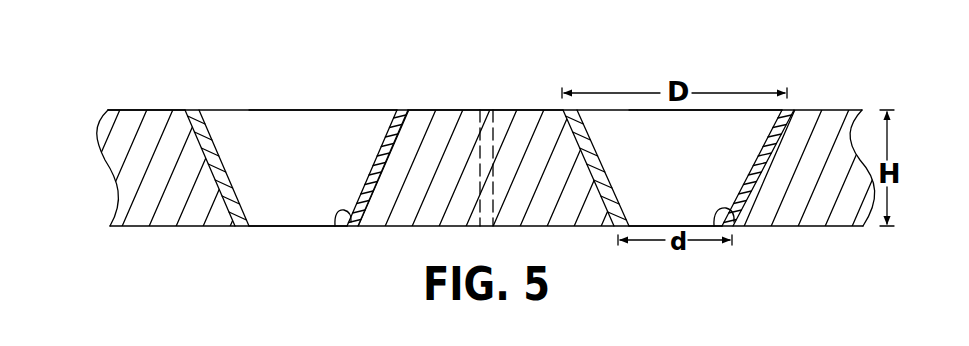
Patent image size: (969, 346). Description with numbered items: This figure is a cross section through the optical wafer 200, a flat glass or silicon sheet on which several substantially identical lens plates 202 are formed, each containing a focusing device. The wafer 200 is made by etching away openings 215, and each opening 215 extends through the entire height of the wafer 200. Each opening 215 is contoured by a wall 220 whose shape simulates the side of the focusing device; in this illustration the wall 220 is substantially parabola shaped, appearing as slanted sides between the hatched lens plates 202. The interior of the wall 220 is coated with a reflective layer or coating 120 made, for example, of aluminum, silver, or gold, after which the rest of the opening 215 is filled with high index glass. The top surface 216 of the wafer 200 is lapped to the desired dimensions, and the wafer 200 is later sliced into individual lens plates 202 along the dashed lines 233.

The reflective layer or coating 120 is at (193, 227).
The optical wafer 200 is at (473, 100).
The lens plate 202 is at (132, 122).
The opening 215 is at (300, 114).
The top surface 216 is at (170, 107).
The wall 220 is at (405, 120).
The lines 233 is at (493, 130).